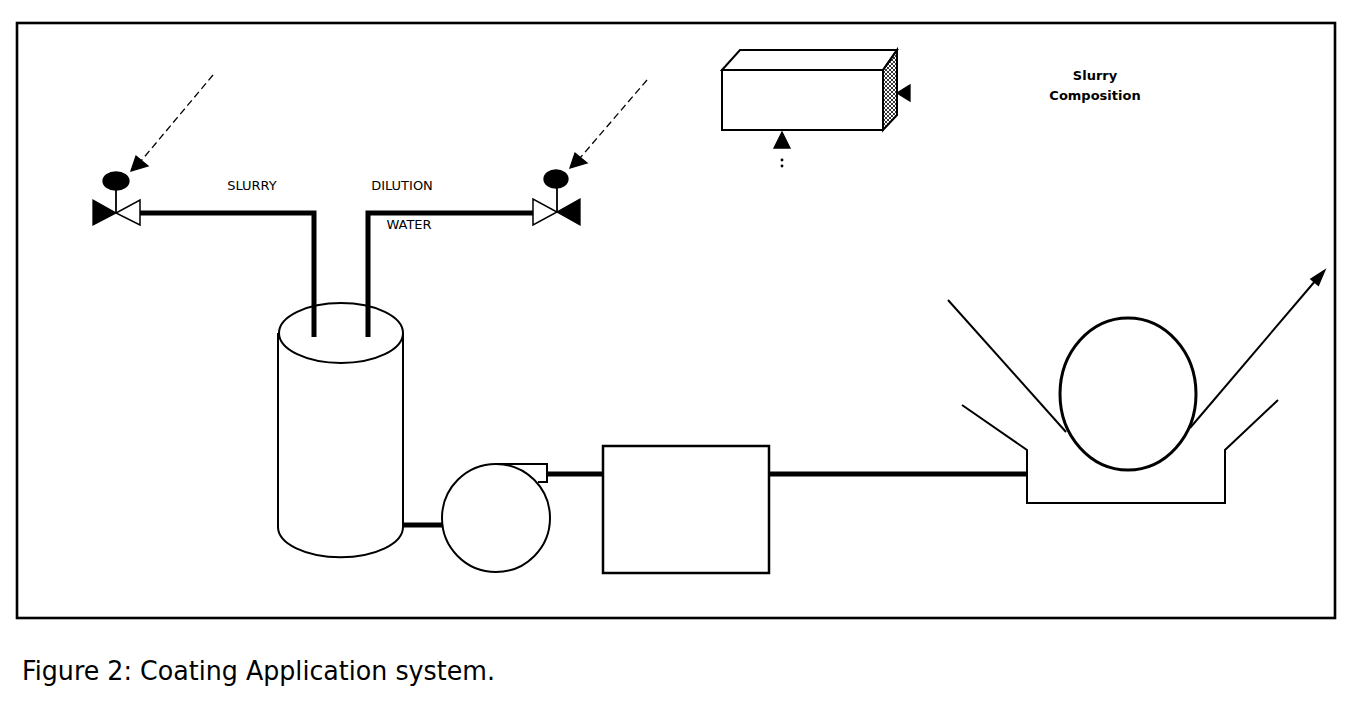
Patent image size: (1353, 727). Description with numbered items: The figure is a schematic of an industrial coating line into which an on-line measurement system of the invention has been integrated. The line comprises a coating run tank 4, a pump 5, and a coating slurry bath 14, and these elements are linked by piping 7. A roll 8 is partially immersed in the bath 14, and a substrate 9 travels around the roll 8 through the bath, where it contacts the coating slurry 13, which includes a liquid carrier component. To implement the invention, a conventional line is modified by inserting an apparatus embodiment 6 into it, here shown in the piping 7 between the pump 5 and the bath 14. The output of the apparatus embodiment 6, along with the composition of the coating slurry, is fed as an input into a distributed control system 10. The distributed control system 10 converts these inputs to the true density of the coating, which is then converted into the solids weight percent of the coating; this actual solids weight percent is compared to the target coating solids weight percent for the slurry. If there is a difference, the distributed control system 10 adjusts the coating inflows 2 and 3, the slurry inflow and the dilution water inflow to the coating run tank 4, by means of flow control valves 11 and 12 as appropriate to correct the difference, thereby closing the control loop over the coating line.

The coating inflow 2 is at (243, 216).
The coating inflow 3 is at (505, 216).
The coating run tank 4 is at (340, 430).
The pump 5 is at (503, 518).
The apparatus embodiment 6 is at (692, 446).
The piping 7 is at (853, 477).
The roll 8 is at (1128, 394).
The substrate 9 is at (952, 310).
The distributed control system 10 is at (816, 108).
The flow control valve 11 is at (105, 176).
The flow control valve 12 is at (545, 176).
The coating slurry 13 is at (1120, 484).
The coating slurry bath 14 is at (1225, 480).